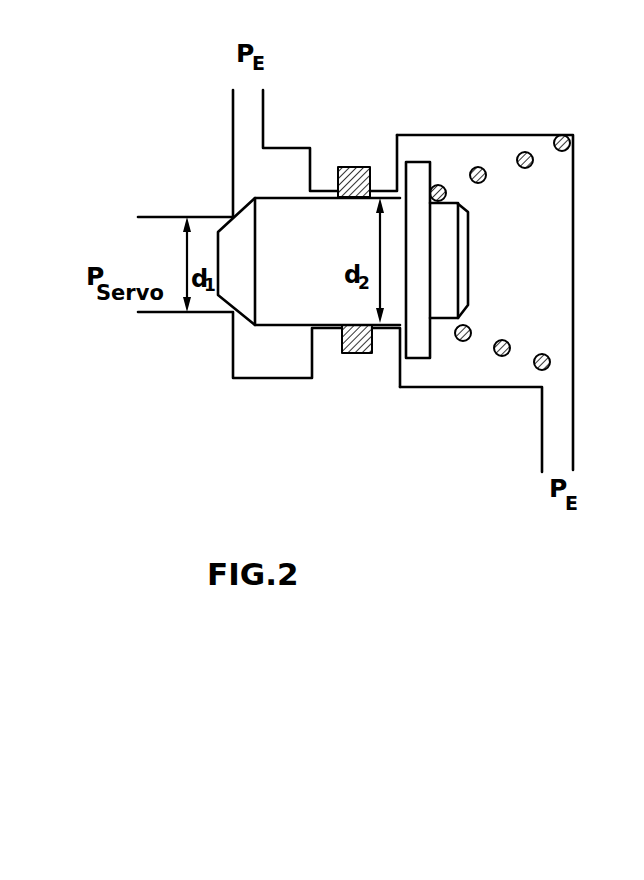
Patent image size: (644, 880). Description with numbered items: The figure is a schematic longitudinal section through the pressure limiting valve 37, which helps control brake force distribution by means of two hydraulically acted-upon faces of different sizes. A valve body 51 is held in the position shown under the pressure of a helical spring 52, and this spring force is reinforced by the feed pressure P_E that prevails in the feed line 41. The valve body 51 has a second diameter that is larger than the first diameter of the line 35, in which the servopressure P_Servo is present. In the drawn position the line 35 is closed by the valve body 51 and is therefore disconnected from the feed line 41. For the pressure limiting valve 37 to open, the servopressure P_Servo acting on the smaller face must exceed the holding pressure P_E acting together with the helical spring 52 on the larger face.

The pressure limiting valve 37 is at (342, 106).
The line 35 is at (172, 312).
The valve body 51 is at (325, 336).
The feed line 41 is at (575, 433).
The helical spring 52 is at (498, 355).